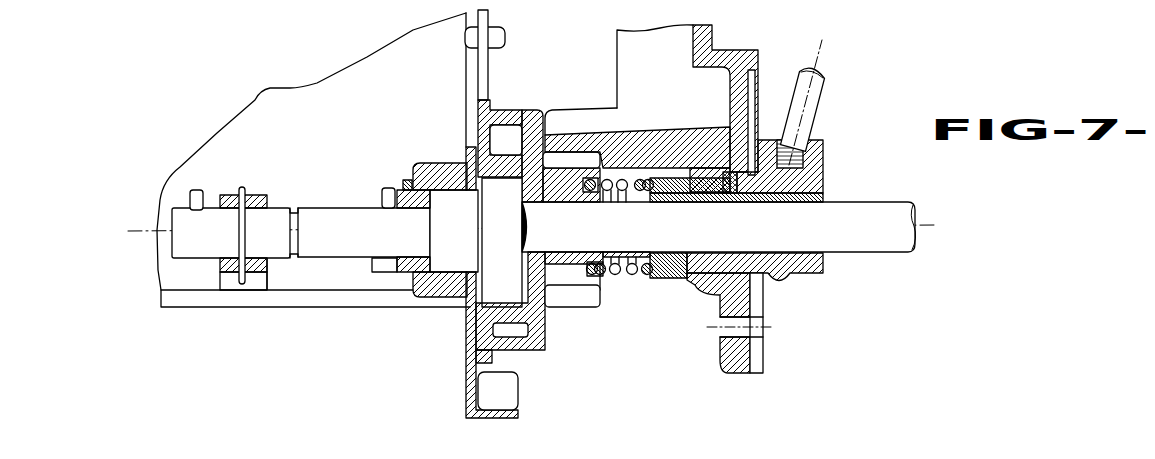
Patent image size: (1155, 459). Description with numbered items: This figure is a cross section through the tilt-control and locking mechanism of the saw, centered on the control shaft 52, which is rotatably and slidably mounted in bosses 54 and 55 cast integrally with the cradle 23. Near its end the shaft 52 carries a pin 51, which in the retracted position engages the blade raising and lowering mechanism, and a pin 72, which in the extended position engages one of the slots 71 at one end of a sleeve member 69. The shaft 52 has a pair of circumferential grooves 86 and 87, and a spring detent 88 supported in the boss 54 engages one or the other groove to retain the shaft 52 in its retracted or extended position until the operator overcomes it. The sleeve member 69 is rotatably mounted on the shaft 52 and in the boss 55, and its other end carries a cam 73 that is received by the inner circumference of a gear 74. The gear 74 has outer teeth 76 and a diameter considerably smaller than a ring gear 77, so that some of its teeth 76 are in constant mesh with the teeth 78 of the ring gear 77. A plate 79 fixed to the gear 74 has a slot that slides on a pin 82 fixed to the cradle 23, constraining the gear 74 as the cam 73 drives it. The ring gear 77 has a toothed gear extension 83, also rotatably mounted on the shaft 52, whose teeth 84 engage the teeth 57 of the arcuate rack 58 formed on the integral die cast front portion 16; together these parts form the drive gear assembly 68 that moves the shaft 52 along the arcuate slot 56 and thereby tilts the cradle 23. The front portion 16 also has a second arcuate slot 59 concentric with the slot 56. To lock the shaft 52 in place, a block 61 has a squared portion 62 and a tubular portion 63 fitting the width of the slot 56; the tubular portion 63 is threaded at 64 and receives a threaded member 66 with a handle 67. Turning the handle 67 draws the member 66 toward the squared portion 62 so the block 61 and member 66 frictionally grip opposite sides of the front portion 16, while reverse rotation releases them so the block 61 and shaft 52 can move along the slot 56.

The integral die cast front portion 16 is at (712, 40).
The cradle 23 is at (262, 108).
The pin 51 is at (193, 192).
The shaft 52 is at (185, 226).
The boss 54 is at (228, 195).
The boss 55 is at (422, 170).
The arcuate slot 56 is at (697, 297).
The teeth 57 is at (607, 147).
The arcuate rack 58 is at (643, 137).
The second arcuate slot 59 is at (748, 323).
The block 61 is at (653, 285).
The squared portion 62 is at (653, 283).
The tubular portion 63 is at (700, 190).
The threads 64 is at (822, 183).
The threaded member 66 is at (811, 273).
The handle 67 is at (818, 107).
The drive gear assembly 68 is at (548, 340).
The sleeve member 69 is at (437, 268).
The slots 71 is at (380, 267).
The pin 72 is at (388, 190).
The cam 73 is at (484, 217).
The gear 74 is at (468, 322).
The teeth 76 is at (505, 147).
The ring gear 77 is at (533, 113).
The teeth 78 is at (478, 132).
The plate 79 is at (488, 68).
The pin 82 is at (500, 26).
The toothed gear extension 83 is at (600, 296).
The teeth 84 is at (563, 302).
The circumferential groove 86 is at (295, 258).
The circumferential groove 87 is at (232, 243).
The spring detent 88 is at (243, 192).